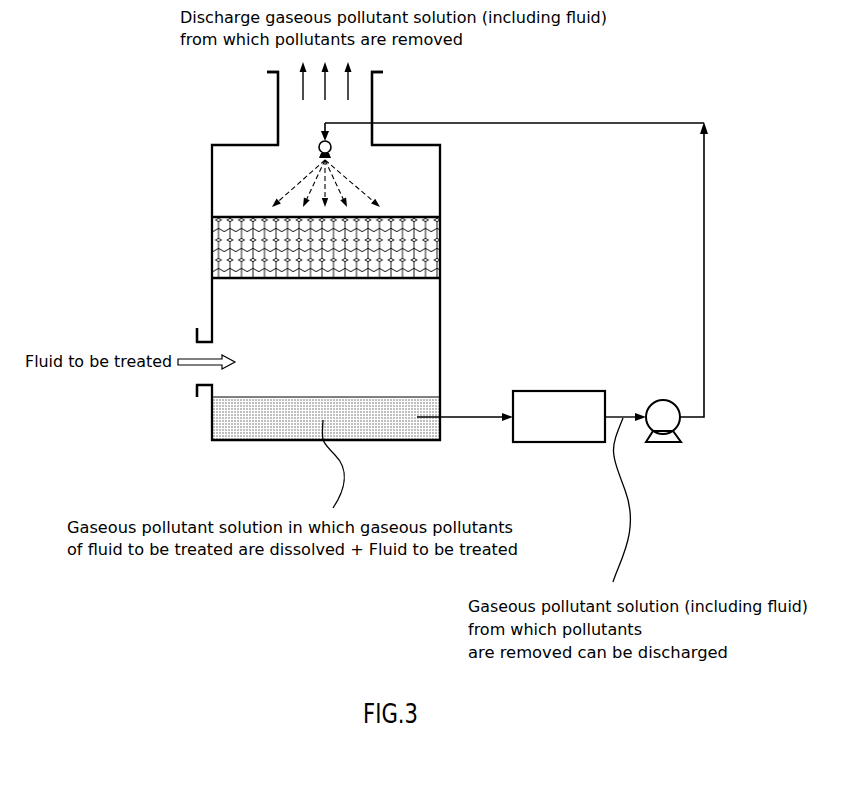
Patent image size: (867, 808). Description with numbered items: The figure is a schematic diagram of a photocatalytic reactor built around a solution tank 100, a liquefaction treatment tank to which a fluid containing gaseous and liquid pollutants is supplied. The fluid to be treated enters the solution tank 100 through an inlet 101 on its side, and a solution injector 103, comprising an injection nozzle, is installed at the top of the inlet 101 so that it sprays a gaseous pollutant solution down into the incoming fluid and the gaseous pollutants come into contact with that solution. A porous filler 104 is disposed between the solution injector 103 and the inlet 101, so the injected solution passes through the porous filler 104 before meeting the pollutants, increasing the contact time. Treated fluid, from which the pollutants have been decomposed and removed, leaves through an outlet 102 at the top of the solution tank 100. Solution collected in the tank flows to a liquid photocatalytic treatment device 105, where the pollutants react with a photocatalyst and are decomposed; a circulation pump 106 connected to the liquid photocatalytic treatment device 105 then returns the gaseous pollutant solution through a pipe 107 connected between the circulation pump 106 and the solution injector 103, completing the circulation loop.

The solution tank 100 is at (206, 181).
The inlet 101 is at (205, 338).
The outlet 102 is at (278, 107).
The solution injector 103 is at (331, 148).
The porous filler 104 is at (440, 238).
The liquid photocatalytic treatment device 105 is at (560, 391).
The circulation pump 106 is at (661, 400).
The pipe 107 is at (704, 235).